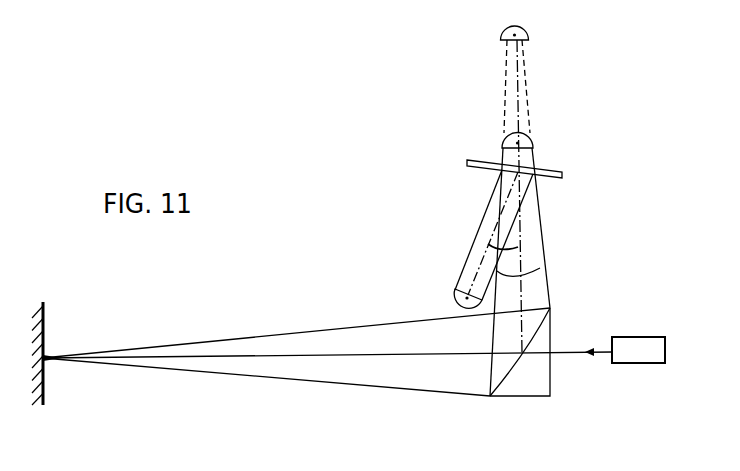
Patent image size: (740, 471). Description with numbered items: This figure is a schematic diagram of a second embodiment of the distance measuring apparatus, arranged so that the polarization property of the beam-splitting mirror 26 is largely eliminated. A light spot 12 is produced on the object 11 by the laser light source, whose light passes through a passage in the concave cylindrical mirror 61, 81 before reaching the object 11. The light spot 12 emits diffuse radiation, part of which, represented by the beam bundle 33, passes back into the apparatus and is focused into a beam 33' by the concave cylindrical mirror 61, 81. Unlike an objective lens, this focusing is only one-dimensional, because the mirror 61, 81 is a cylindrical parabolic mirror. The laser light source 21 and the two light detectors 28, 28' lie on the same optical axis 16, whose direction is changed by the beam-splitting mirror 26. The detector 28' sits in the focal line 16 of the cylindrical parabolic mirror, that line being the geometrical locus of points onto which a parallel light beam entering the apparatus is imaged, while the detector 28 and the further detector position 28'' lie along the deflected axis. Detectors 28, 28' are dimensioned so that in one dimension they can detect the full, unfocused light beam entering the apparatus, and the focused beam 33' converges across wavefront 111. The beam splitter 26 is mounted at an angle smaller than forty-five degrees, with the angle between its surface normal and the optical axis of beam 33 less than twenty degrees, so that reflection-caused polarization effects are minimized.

The object 11 is at (36, 314).
The light spot 12 is at (48, 356).
The beam bundle 33 is at (296, 361).
The optical axis 16 is at (258, 355).
The light source 21 is at (658, 350).
The concave cylindrical mirror 61 is at (528, 380).
The beam deflecting element (prism) 81 is at (524, 389).
The focused beam 33' is at (540, 218).
The wavefront / intermediate image 111 is at (518, 247).
The beam-splitting mirror 26 is at (481, 166).
The detector (second position) 28'' is at (544, 71).
The light detector 28 is at (543, 140).
The light detector 28' is at (444, 298).